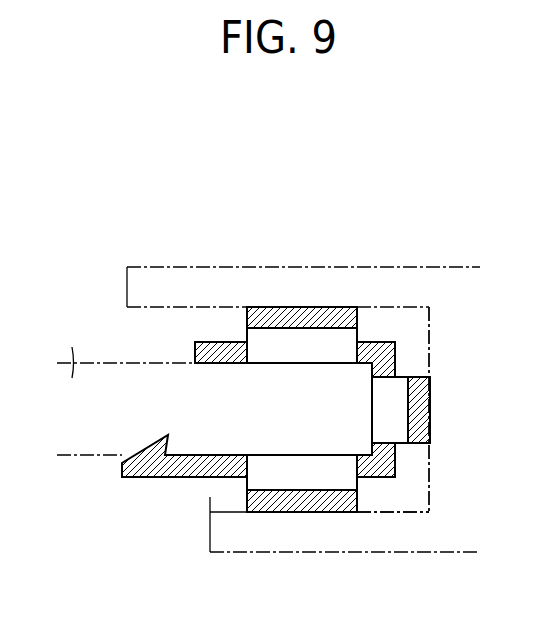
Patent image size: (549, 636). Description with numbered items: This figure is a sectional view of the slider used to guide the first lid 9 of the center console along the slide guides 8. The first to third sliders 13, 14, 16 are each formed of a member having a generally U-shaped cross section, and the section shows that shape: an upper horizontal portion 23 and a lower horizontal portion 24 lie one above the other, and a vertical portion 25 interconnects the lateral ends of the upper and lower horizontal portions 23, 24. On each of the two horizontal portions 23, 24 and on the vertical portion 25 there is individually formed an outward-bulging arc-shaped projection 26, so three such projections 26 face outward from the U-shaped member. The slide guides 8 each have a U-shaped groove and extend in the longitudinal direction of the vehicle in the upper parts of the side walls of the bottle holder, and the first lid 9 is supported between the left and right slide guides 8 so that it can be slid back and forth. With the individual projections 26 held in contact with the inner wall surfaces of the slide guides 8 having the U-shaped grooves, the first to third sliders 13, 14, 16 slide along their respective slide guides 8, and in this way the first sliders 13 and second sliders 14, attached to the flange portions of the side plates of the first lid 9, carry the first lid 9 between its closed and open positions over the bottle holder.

The slide guide 8 is at (405, 512).
The first lid 9 is at (405, 512).
The first slider 13 is at (372, 332).
The second slider 14 is at (372, 332).
The third slider 16 is at (372, 332).
The upper horizontal portion 23 is at (195, 343).
The lower horizontal portion 24 is at (188, 477).
The vertical portion 25 is at (395, 353).
The projection 26 is at (282, 307).